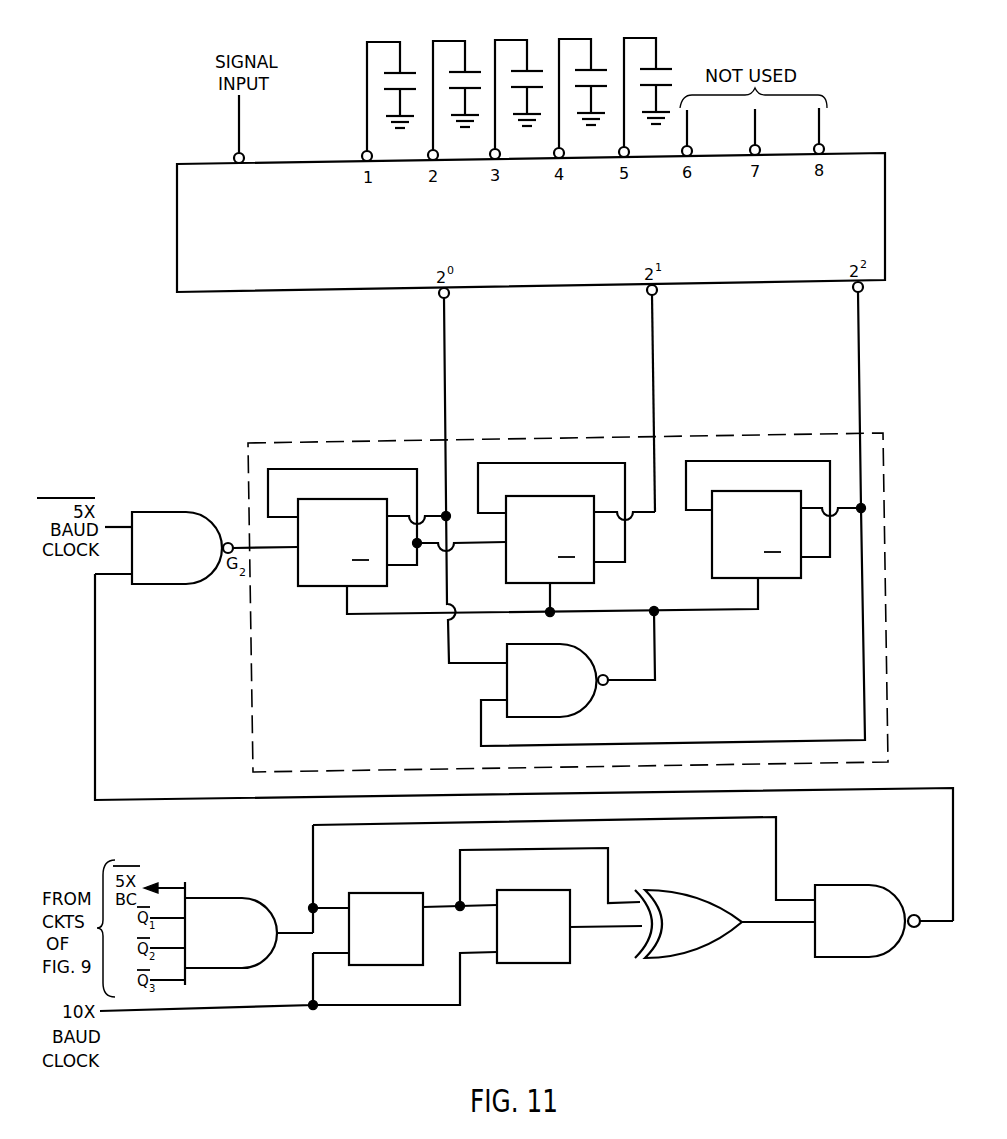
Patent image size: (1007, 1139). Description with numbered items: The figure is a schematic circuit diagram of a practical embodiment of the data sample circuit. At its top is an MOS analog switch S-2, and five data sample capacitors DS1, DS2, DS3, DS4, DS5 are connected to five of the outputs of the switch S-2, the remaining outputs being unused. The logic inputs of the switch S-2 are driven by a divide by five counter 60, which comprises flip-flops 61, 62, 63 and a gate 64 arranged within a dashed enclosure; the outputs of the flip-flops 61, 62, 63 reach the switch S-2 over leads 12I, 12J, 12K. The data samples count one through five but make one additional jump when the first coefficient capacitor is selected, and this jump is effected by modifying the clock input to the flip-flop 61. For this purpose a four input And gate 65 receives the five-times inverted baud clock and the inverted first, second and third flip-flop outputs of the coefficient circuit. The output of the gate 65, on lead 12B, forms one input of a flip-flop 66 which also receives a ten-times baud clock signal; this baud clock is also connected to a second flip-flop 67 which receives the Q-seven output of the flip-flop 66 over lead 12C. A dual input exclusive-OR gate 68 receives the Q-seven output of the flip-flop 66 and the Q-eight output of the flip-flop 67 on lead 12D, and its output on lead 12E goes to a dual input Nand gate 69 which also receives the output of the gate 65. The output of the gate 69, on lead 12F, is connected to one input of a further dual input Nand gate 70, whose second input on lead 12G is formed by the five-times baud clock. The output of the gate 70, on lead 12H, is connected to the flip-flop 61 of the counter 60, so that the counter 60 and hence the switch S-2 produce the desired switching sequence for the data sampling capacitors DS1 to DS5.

The MOS analog switch S-2 is at (188, 241).
The data sample capacitor DS1 is at (408, 70).
The data sample capacitor DS2 is at (473, 69).
The data sample capacitor DS3 is at (535, 68).
The data sample capacitor DS4 is at (599, 67).
The data sample capacitor DS5 is at (664, 66).
The waveform lead of gate 65 12B is at (290, 933).
The waveform lead of flip-flop 66 12C is at (438, 910).
The waveform lead of flip-flop 67 12D is at (605, 930).
The waveform lead of gate 68 12E is at (775, 927).
The waveform lead of gate 69 12F is at (932, 928).
The 5X baud clock lead 12G is at (115, 527).
The waveform lead of gate 70 12H is at (272, 552).
The waveform lead of flip-flop 61 12I is at (446, 333).
The waveform lead of flip-flop 62 12J is at (654, 327).
The waveform lead of flip-flop 63 12K is at (860, 323).
The divide by five counter 60 is at (886, 580).
The flip-flop 61 is at (345, 505).
The flip-flop 62 is at (548, 505).
The flip-flop 63 is at (760, 488).
The gate 64 is at (548, 706).
The four input And gate 65 is at (212, 910).
The flip-flop 66 is at (383, 908).
The second flip-flop 67 is at (532, 908).
The dual input exclusive-OR gate 68 is at (688, 902).
The dual input Nand gate 69 is at (855, 900).
The dual input Nand gate 70 is at (162, 578).